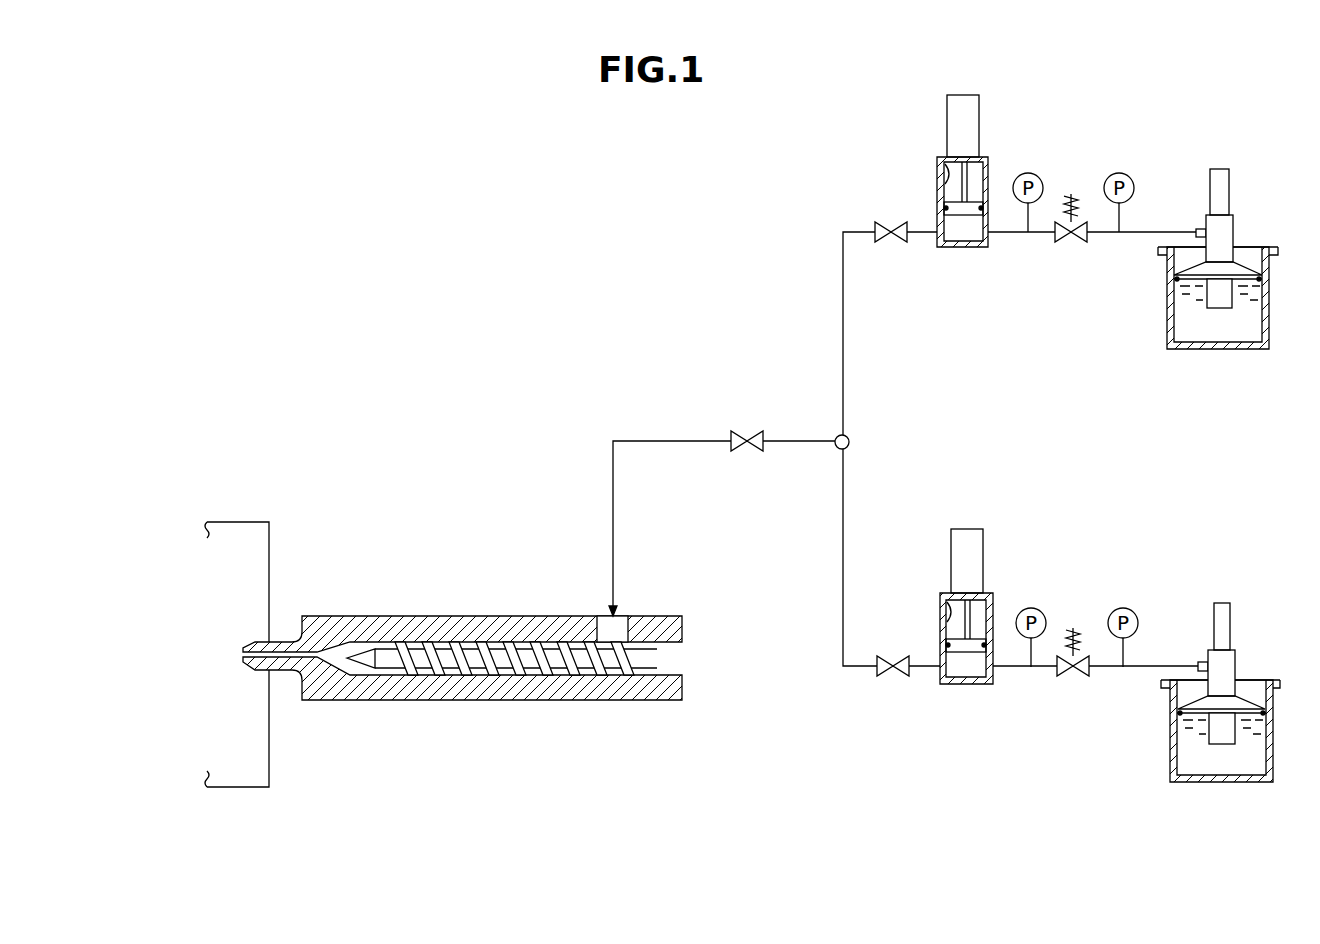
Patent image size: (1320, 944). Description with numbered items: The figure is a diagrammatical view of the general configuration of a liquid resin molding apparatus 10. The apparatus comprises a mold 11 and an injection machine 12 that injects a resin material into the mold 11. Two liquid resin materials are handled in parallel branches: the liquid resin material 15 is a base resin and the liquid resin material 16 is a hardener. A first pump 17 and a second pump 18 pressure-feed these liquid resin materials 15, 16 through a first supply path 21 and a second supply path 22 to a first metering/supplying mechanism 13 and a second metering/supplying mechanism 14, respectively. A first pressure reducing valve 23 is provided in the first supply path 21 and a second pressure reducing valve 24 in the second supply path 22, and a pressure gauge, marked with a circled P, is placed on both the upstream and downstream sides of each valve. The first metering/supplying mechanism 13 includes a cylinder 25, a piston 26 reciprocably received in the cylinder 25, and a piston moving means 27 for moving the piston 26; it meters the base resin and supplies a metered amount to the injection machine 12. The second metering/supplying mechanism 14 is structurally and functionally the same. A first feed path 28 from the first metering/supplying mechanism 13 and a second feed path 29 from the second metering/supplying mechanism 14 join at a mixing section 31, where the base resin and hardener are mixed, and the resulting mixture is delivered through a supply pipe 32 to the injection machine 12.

The liquid resin molding apparatus 10 is at (520, 233).
The mold 11 is at (232, 522).
The injection machine 12 is at (452, 616).
The first metering/supplying mechanism 13 is at (967, 247).
The second metering/supplying mechanism 14 is at (965, 684).
The liquid resin material (base resin) 15 is at (1216, 333).
The liquid resin material (hardener) 16 is at (1220, 766).
The first pump 17 is at (1233, 229).
The second pump 18 is at (1236, 663).
The first supply path 21 is at (1143, 240).
The second supply path 22 is at (1143, 673).
The first pressure reducing valve 23 is at (1075, 242).
The second pressure reducing valve 24 is at (1073, 678).
The cylinder 25 is at (944, 160).
The piston 26 is at (944, 210).
The piston moving means 27 is at (979, 115).
The first feed path 28 is at (843, 321).
The second feed path 29 is at (843, 563).
The mixing section 31 is at (850, 443).
The supply pipe 32 is at (630, 441).